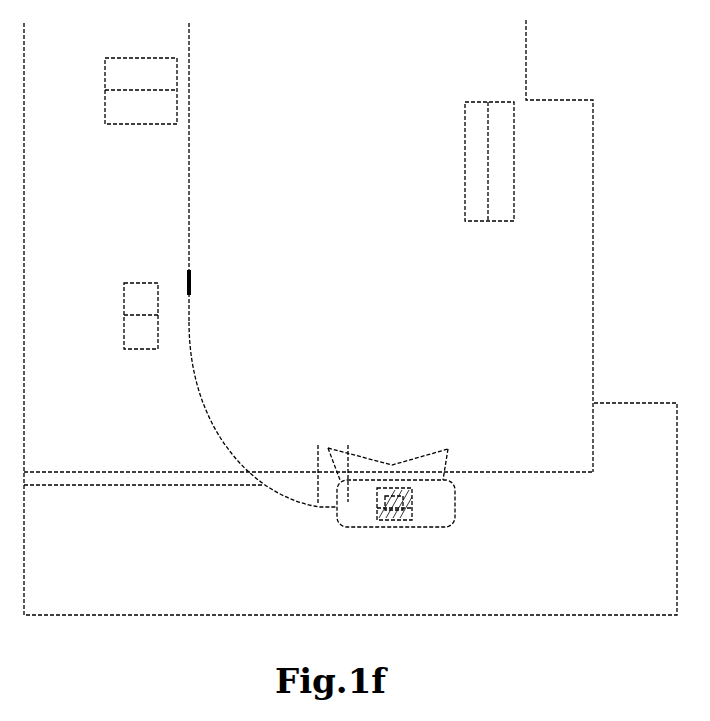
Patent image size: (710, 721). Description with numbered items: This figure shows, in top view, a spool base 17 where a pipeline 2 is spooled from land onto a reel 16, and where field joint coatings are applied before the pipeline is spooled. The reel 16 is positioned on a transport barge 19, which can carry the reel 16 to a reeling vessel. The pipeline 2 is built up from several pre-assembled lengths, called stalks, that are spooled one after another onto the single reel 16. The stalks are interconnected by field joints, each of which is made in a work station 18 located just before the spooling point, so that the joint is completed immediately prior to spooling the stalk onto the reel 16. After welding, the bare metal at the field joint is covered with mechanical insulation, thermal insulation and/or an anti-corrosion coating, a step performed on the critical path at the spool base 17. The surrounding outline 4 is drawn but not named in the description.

The pipeline 2 is at (190, 192).
The housing 4 is at (535, 558).
The reel 16 is at (398, 521).
The spool base 17 is at (525, 315).
The work station 18 is at (189, 325).
The transport barge 19 is at (443, 503).